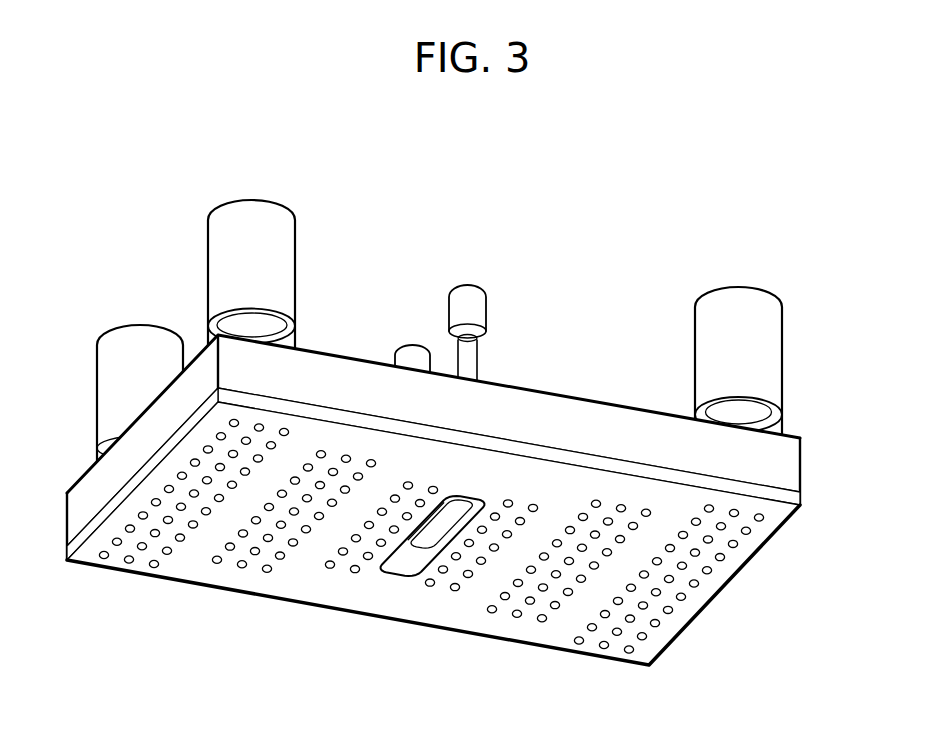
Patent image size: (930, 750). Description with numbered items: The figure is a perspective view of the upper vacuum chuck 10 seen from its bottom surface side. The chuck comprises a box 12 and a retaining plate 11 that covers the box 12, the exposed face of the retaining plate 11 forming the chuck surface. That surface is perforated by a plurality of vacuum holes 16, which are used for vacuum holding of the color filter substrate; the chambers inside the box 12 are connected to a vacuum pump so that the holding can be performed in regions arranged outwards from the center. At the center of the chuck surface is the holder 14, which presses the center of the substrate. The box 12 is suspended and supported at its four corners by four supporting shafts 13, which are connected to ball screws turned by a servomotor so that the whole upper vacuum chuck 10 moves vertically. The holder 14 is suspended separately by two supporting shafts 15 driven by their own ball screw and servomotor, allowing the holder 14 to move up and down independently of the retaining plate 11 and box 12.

The upper vacuum chuck 10 is at (482, 162).
The retaining plate 11 is at (796, 500).
The box 12 is at (797, 463).
The supporting shafts 13 is at (143, 336).
The holder 14 is at (400, 568).
The supporting shafts 15 is at (412, 354).
The vacuum holes 16 is at (737, 547).